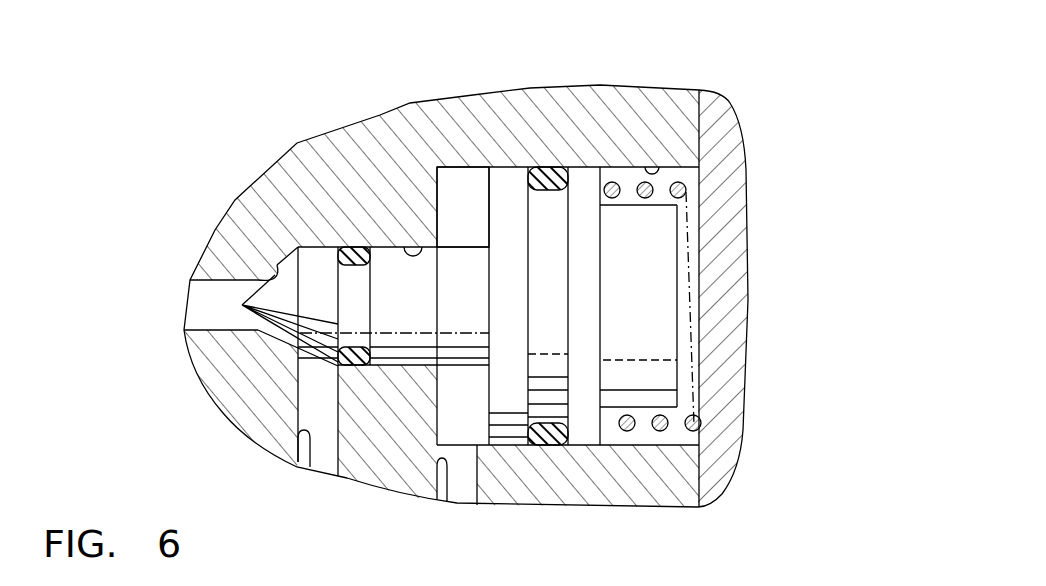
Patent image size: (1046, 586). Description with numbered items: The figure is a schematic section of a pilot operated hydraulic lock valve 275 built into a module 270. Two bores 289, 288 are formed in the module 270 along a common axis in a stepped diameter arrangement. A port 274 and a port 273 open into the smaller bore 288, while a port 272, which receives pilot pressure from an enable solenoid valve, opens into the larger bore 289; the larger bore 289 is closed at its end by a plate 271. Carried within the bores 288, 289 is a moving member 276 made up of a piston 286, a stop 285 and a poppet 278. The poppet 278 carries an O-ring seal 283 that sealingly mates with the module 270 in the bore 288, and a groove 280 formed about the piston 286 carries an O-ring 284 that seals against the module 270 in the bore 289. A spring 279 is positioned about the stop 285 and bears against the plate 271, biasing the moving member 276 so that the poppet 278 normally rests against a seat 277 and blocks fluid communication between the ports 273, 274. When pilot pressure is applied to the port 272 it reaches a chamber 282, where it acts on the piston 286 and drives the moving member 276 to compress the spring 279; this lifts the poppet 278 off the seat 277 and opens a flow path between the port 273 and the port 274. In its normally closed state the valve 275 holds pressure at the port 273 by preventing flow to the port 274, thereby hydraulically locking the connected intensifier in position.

The module 270 is at (204, 237).
The plate 271 is at (732, 272).
The port 272 is at (447, 502).
The port 273 is at (310, 467).
The port 274 is at (205, 329).
The hydraulic lock valve 275 is at (211, 441).
The moving member 276 is at (664, 304).
The seat 277 is at (238, 298).
The poppet 278 is at (288, 317).
The spring 279 is at (698, 422).
The groove 280 is at (570, 317).
The chamber 282 is at (460, 185).
The O-ring seal 283 is at (352, 247).
The O-ring 284 is at (557, 445).
The stop 285 is at (677, 230).
The piston 286 is at (515, 430).
The bore 288 is at (403, 247).
The bore 289 is at (652, 170).